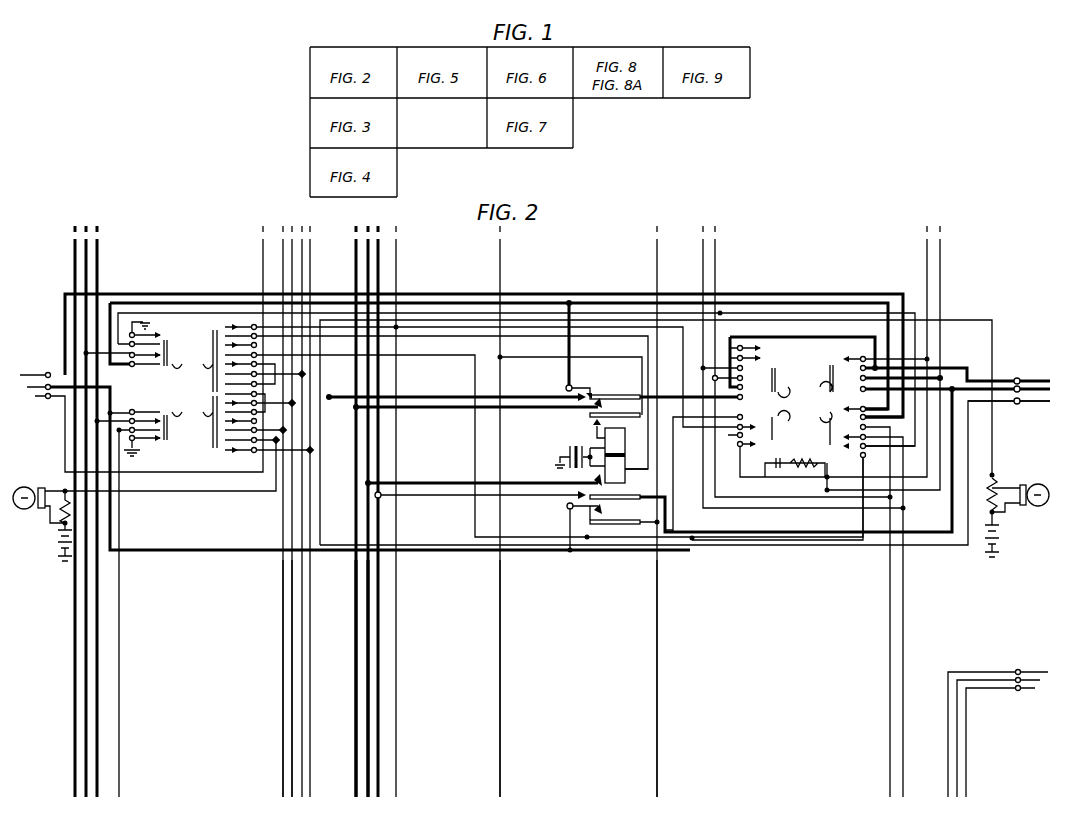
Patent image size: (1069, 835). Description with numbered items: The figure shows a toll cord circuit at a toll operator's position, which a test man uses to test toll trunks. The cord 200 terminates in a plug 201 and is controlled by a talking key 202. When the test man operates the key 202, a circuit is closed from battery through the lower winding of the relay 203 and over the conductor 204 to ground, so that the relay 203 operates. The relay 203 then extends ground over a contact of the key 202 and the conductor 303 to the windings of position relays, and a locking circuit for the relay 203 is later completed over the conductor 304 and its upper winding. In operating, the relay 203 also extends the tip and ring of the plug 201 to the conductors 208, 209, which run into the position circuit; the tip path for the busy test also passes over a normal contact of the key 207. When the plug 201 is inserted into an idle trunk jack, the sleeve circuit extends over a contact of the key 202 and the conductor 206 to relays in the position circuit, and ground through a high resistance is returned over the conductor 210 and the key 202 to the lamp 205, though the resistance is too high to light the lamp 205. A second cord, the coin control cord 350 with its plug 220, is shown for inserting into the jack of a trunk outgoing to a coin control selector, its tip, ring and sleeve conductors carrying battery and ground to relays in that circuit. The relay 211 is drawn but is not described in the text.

The cord 200 is at (484, 340).
The plug 201 is at (1037, 380).
The talking key 202 is at (188, 365).
The relay 203 is at (612, 484).
The conductor 204 is at (396, 657).
The lamp 205 is at (1017, 515).
The conductor 206 is at (292, 637).
The key 207 is at (754, 412).
The conductor 208 is at (357, 617).
The conductor 209 is at (368, 637).
The conductor 210 is at (283, 617).
The relay 211 is at (843, 393).
The plug 220 is at (1038, 672).
The conductor 303 is at (658, 657).
The conductor 304 is at (500, 657).
The coin control cord 350 is at (948, 733).